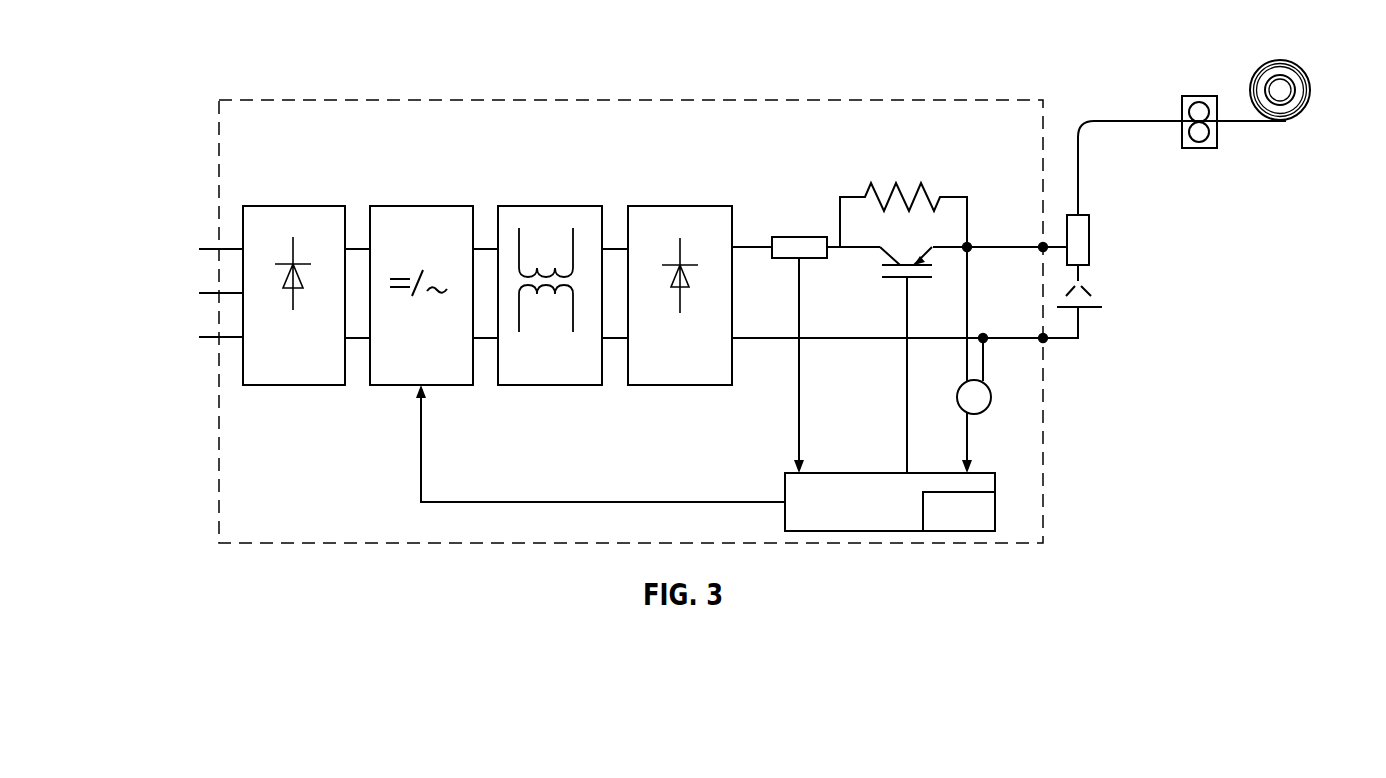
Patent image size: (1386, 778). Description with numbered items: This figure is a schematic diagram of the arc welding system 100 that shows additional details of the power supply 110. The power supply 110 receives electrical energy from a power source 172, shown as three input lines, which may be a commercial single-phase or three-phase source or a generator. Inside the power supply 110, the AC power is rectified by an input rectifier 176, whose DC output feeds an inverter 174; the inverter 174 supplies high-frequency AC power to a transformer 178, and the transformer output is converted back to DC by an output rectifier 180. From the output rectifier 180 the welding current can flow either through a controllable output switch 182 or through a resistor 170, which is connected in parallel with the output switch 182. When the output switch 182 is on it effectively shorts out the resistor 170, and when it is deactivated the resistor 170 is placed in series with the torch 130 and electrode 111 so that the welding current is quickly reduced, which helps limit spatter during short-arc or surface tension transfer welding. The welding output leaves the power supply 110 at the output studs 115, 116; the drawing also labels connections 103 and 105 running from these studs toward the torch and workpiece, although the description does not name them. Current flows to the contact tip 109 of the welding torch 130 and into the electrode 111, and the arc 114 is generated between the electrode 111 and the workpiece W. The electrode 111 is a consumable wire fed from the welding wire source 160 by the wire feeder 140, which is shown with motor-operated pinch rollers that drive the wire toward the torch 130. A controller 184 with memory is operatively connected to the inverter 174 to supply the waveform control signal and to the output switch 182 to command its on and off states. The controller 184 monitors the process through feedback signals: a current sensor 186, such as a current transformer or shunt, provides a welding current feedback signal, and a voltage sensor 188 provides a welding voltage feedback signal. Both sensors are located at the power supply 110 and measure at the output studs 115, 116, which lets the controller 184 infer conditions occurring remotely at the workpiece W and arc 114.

The arc welding system 100 is at (1103, 46).
The positive output lead 103 is at (1046, 240).
The negative output lead 105 is at (1053, 343).
The contact tip 109 is at (1090, 253).
The power supply 110 is at (1043, 516).
The electrode 111 is at (1080, 191).
The arc 114 is at (1102, 278).
The output stud 115 is at (1043, 243).
The output stud 116 is at (1043, 342).
The welding torch 130 is at (1108, 211).
The wire feeder 140 is at (1195, 148).
The welding wire source 160 is at (1290, 118).
The resistor 170 is at (910, 186).
The power source 172 is at (176, 366).
The inverter 174 is at (421, 206).
The input rectifier 176 is at (293, 206).
The transformer 178 is at (550, 206).
The output rectifier 180 is at (680, 206).
The output switch 182 is at (900, 281).
The controller 184 is at (785, 492).
The current sensor 186 is at (812, 235).
The voltage sensor 188 is at (992, 399).
The workpiece W is at (1096, 308).